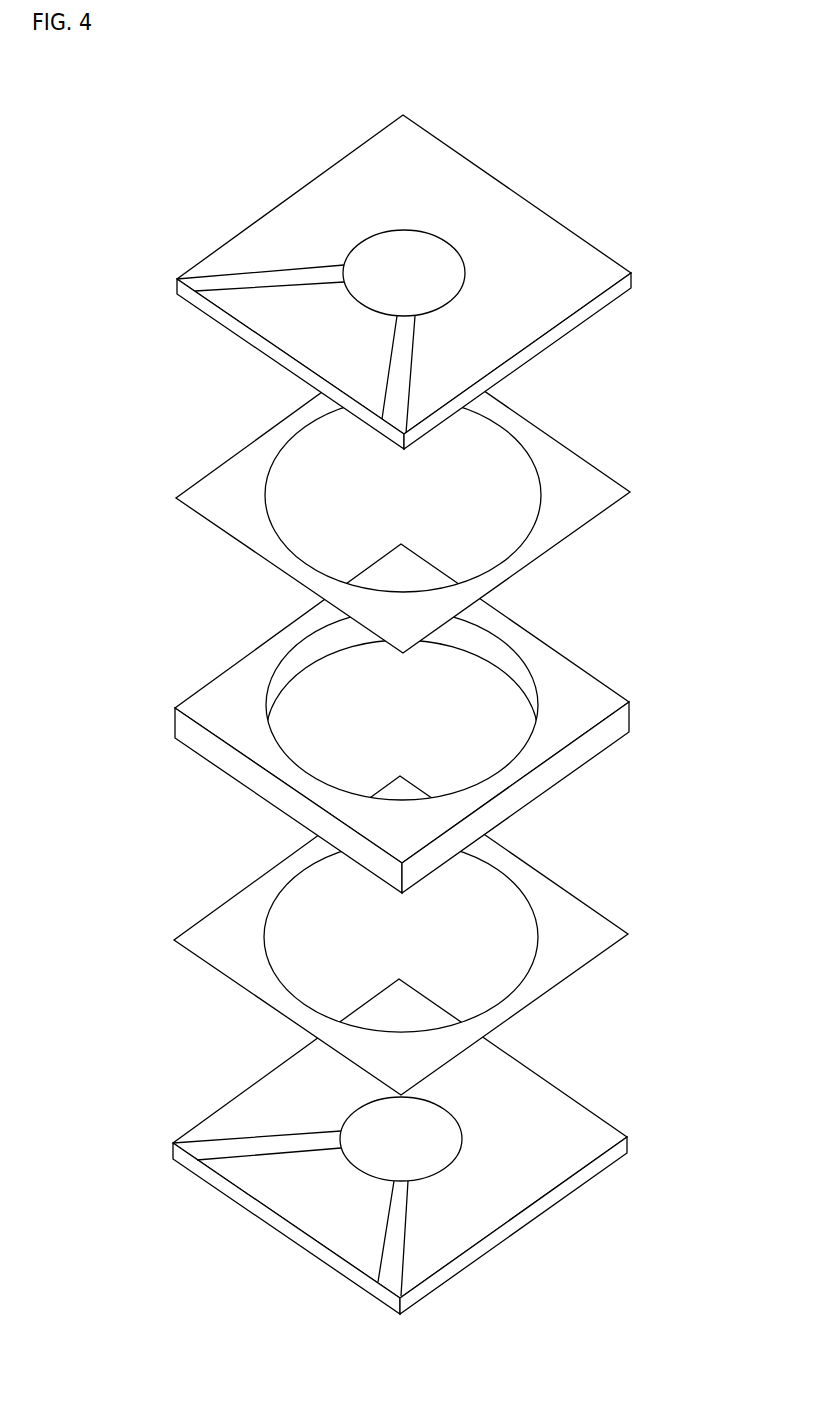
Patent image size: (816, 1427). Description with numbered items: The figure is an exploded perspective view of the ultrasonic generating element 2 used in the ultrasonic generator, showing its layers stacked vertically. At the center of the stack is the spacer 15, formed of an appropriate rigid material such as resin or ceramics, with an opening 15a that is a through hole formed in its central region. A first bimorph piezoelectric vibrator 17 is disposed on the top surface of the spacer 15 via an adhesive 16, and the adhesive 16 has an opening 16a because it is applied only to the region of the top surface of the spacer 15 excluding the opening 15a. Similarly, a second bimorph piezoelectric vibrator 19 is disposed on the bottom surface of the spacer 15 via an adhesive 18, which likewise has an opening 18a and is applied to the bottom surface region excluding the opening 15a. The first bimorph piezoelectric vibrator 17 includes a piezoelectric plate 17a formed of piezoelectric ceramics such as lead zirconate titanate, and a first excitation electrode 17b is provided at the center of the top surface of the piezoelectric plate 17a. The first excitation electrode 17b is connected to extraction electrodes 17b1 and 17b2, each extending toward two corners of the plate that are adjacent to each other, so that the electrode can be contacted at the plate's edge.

The ultrasonic generating element 2 is at (142, 170).
The spacer 15 is at (630, 712).
The opening 15a is at (480, 690).
The adhesive 16 is at (618, 477).
The opening 16a is at (500, 450).
The first bimorph piezoelectric vibrator 17 is at (318, 175).
The piezoelectric plate 17a is at (632, 273).
The first excitation electrode 17b is at (435, 235).
The extraction electrode 17b1 is at (257, 272).
The extraction electrode 17b2 is at (412, 362).
The adhesive 18 is at (613, 920).
The opening 18a is at (487, 905).
The second bimorph piezoelectric vibrator 19 is at (597, 1108).